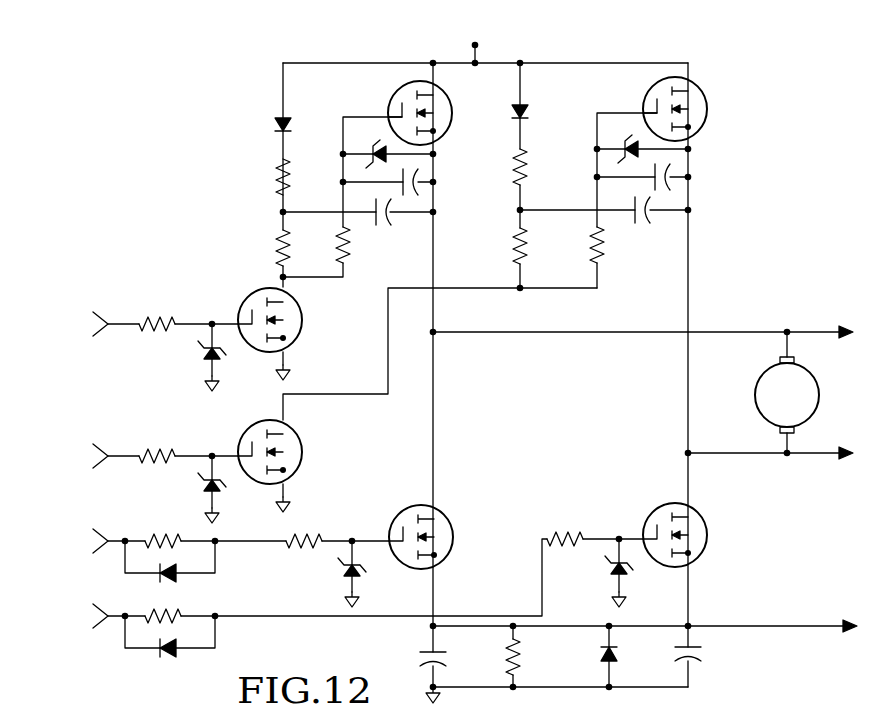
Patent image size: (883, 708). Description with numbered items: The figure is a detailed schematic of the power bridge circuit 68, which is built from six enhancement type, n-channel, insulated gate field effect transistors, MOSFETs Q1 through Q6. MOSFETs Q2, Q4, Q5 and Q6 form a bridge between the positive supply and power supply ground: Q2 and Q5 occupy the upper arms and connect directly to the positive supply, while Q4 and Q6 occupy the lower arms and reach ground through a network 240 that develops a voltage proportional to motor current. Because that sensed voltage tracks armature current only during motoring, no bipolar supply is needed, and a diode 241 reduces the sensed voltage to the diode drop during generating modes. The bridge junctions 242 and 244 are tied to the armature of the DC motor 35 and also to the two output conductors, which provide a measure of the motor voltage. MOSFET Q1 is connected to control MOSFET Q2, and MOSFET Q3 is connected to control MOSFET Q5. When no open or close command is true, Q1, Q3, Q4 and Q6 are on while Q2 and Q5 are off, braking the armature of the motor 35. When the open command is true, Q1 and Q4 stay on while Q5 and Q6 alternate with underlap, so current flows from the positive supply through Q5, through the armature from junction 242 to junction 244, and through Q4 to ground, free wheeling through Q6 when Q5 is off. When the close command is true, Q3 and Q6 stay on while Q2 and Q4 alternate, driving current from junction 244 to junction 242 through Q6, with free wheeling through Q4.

The power bridge circuit 68 is at (442, 363).
The DC motor 35 is at (819, 385).
The bridge junction 244 is at (435, 335).
The bridge junction 242 is at (687, 452).
The network 240 is at (578, 664).
The diode 241 is at (625, 655).
The MOSFET Q1 is at (300, 305).
The MOSFET Q2 is at (450, 111).
The MOSFET Q3 is at (300, 438).
The MOSFET Q4 is at (446, 516).
The MOSFET Q5 is at (706, 100).
The MOSFET Q6 is at (709, 531).